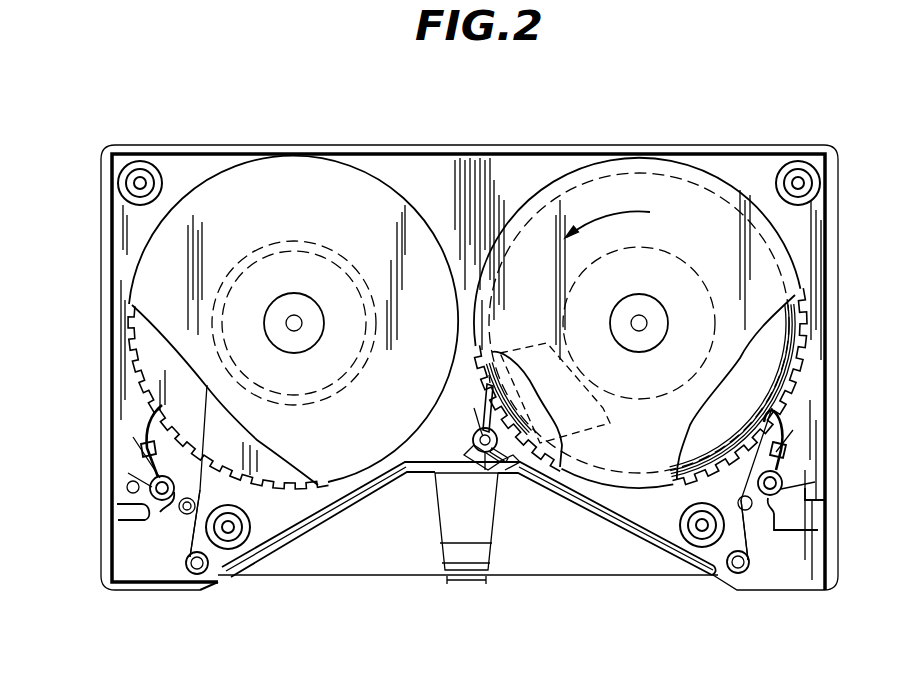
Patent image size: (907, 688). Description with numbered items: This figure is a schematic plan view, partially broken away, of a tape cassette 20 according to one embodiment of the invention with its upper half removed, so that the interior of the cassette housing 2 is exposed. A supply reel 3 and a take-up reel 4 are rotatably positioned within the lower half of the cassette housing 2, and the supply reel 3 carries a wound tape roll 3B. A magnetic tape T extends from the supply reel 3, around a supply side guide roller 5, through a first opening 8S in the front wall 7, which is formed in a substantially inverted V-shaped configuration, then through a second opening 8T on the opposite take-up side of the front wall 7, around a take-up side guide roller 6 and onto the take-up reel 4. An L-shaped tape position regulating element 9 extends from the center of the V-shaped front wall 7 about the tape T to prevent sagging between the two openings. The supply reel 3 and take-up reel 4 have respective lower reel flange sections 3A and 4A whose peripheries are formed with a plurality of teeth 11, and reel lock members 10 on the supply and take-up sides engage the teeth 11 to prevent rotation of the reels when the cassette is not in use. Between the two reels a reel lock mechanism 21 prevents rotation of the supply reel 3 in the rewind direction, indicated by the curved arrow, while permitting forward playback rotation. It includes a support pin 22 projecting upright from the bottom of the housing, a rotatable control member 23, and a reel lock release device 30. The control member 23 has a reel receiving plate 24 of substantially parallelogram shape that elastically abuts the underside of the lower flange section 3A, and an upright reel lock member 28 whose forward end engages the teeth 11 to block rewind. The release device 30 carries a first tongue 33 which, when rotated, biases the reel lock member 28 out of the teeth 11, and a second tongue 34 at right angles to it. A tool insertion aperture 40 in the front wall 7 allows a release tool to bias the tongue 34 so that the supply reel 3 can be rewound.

The tape cassette 20 is at (804, 134).
The cassette housing 2 is at (834, 232).
The supply reel 3 is at (575, 200).
The lower reel flange section 3A is at (808, 322).
The tape roll on supply reel 3B is at (682, 185).
The take-up reel 4 is at (347, 190).
The lower reel flange section 4A is at (140, 342).
The supply side guide roller 5 is at (738, 582).
The take-up side guide roller 6 is at (197, 577).
The front wall 7 is at (315, 505).
The second opening 8T is at (228, 577).
The first opening 8S is at (712, 577).
The tape position regulating element 9 is at (462, 540).
The magnetic tape T is at (370, 577).
The reel lock member 10 is at (150, 507).
The teeth 11 is at (802, 368).
The reel lock mechanism 21 is at (473, 404).
The support pin 22 is at (478, 450).
The control member 23 is at (527, 362).
The reel receiving plate 24 is at (612, 421).
The reel lock member 28 is at (480, 392).
The reel lock release device 30 is at (487, 455).
The first tongue 33 is at (478, 436).
The second tongue 34 is at (505, 478).
The tool insertion aperture 40 is at (507, 475).